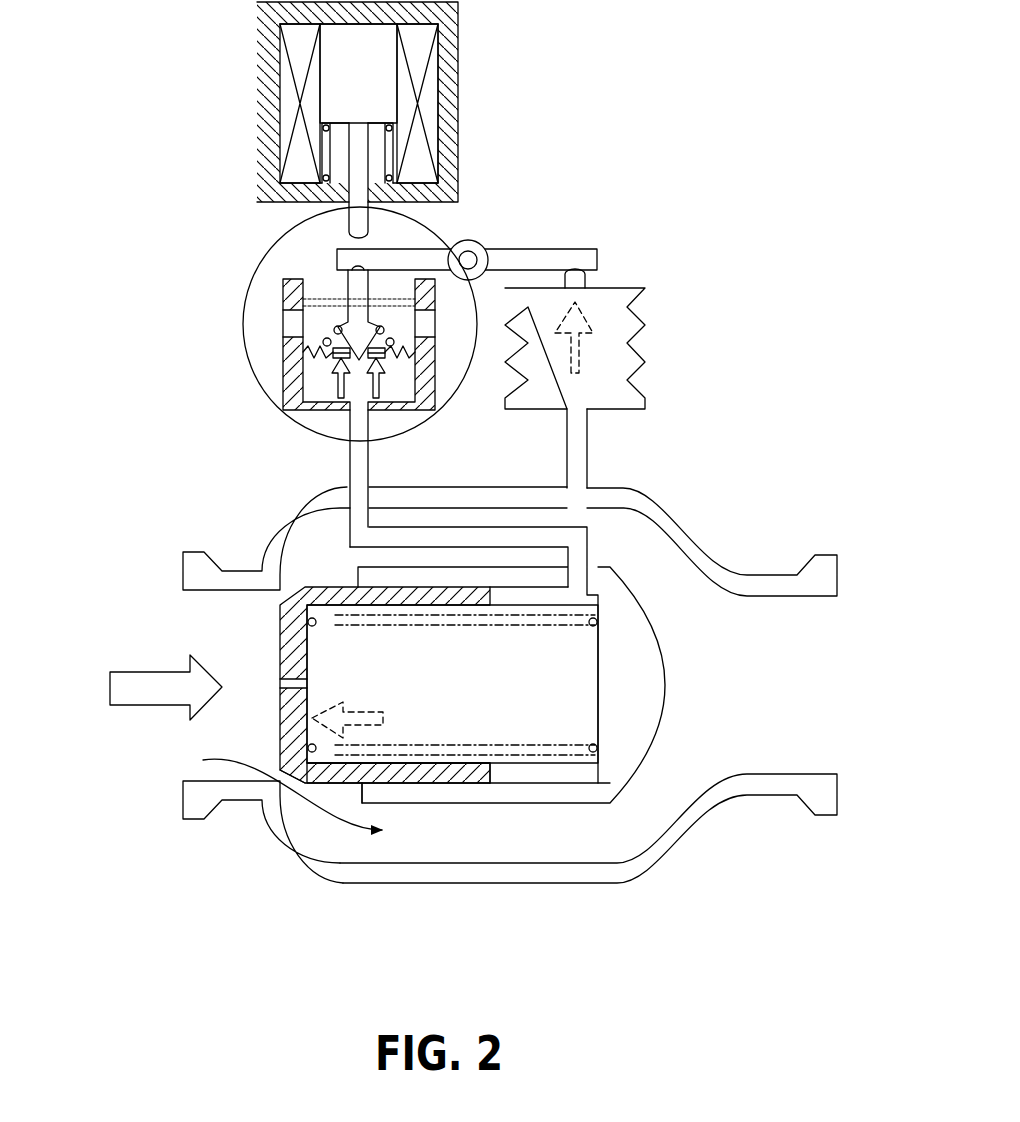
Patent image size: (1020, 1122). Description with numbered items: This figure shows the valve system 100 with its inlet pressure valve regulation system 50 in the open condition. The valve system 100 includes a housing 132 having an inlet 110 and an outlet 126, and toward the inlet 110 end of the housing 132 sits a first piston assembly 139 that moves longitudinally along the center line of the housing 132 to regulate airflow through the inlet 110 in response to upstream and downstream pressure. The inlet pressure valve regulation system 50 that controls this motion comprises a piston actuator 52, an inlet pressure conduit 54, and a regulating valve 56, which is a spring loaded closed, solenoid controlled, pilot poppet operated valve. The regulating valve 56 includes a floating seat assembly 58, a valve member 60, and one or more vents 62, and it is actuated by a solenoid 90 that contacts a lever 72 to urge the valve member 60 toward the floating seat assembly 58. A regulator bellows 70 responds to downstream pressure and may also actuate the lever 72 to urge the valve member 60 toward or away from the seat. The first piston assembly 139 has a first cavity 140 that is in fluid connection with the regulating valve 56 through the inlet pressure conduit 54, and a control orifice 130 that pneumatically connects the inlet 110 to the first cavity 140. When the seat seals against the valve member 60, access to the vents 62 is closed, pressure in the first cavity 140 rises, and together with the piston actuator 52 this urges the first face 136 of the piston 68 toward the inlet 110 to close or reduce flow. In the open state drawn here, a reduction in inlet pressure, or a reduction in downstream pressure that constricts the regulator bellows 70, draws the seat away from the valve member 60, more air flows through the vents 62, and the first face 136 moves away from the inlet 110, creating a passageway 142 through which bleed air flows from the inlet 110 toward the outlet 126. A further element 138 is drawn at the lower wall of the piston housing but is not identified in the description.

The inlet pressure valve regulation system 50 is at (709, 204).
The piston actuator 52 is at (567, 759).
The inlet pressure conduit 54 is at (413, 540).
The regulating valve 56 is at (251, 257).
The floating seat assembly 58 is at (322, 357).
The valve member 60 is at (336, 327).
The vents 62 is at (418, 331).
The piston 68 is at (339, 798).
The regulator bellows 70 is at (650, 375).
The lever 72 is at (471, 240).
The solenoid 90 is at (463, 59).
The valve system 100 is at (151, 442).
The inlet 110 is at (181, 748).
The outlet 126 is at (795, 685).
The control orifice 130 is at (284, 688).
The housing 132 is at (697, 815).
The first face 136 is at (283, 650).
The housing bottom wall 138 is at (341, 792).
The first piston assembly 139 is at (447, 775).
The first cavity 140 is at (490, 740).
The passageway 142 is at (350, 852).